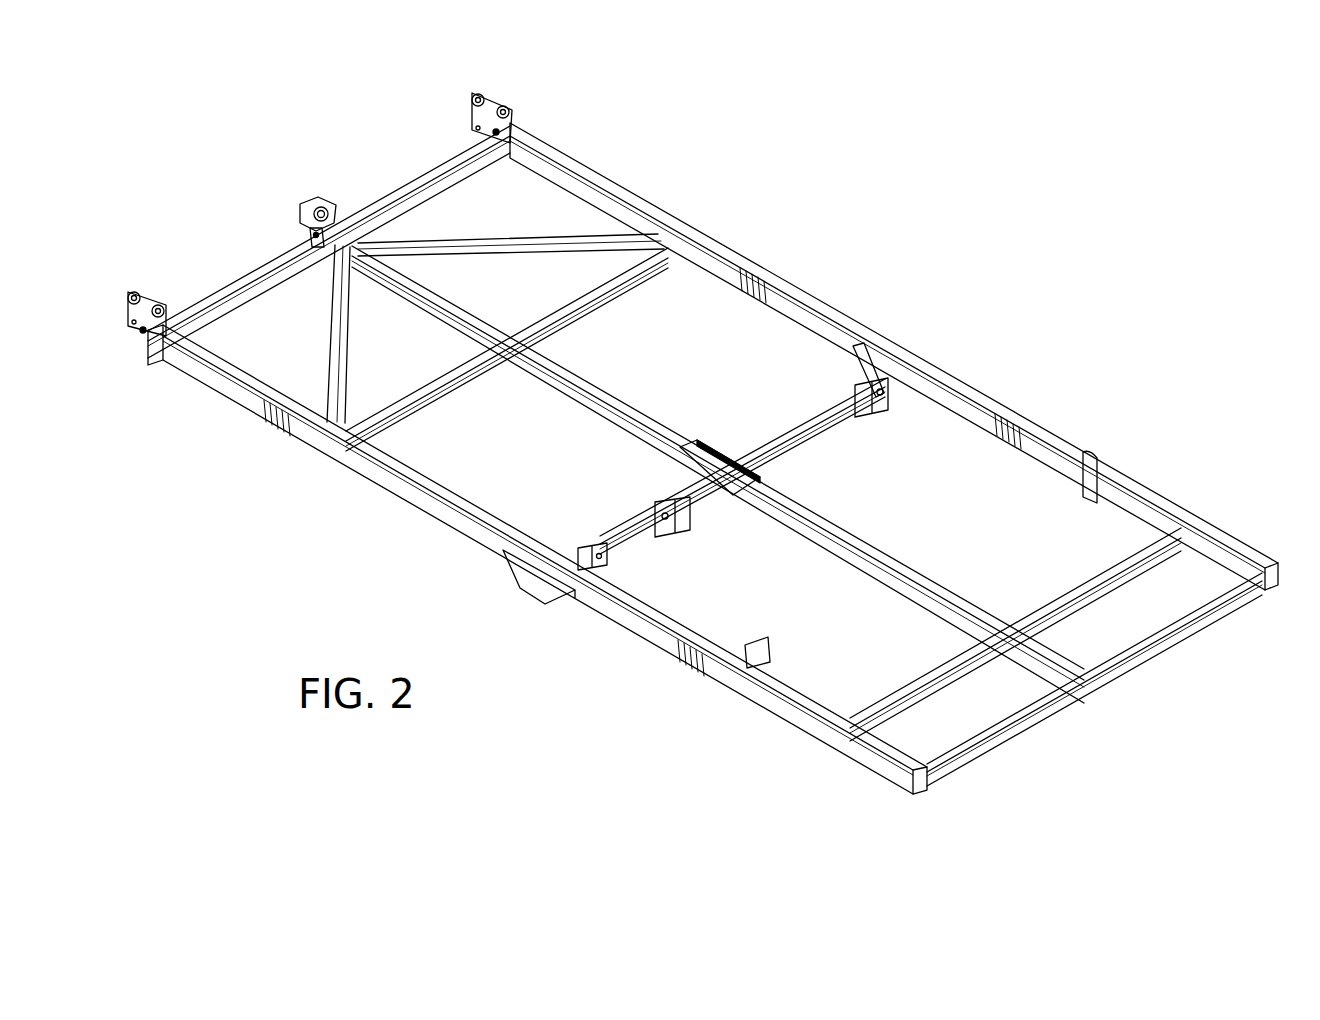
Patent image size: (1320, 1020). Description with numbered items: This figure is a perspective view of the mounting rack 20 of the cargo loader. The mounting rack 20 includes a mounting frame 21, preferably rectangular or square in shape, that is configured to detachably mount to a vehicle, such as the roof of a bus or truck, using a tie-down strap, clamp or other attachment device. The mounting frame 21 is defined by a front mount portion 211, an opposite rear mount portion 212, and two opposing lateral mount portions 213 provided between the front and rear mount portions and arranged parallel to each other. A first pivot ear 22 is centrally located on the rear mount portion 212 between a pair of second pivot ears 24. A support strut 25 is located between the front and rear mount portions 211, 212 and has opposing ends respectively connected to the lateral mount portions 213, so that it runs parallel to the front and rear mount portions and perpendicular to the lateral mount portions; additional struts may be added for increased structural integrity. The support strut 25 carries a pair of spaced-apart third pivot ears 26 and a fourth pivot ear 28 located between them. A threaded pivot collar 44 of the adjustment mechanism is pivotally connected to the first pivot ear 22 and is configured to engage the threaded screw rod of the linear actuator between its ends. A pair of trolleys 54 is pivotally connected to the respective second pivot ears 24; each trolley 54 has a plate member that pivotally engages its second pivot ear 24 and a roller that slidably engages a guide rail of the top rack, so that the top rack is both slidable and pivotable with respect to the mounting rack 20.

The mounting rack 20 is at (270, 182).
The mounting frame 21 is at (1147, 488).
The front mount portion 211 is at (1048, 728).
The rear mount portion 212 is at (397, 205).
The lateral mount portions 213 is at (720, 242).
The first pivot ear 22 is at (312, 241).
The second pivot ears 24 is at (486, 125).
The support strut 25 is at (785, 432).
The third pivot ears 26 is at (893, 398).
The fourth pivot ear 28 is at (667, 532).
The threaded pivot collar 44 is at (315, 198).
The trolleys 54 is at (152, 294).